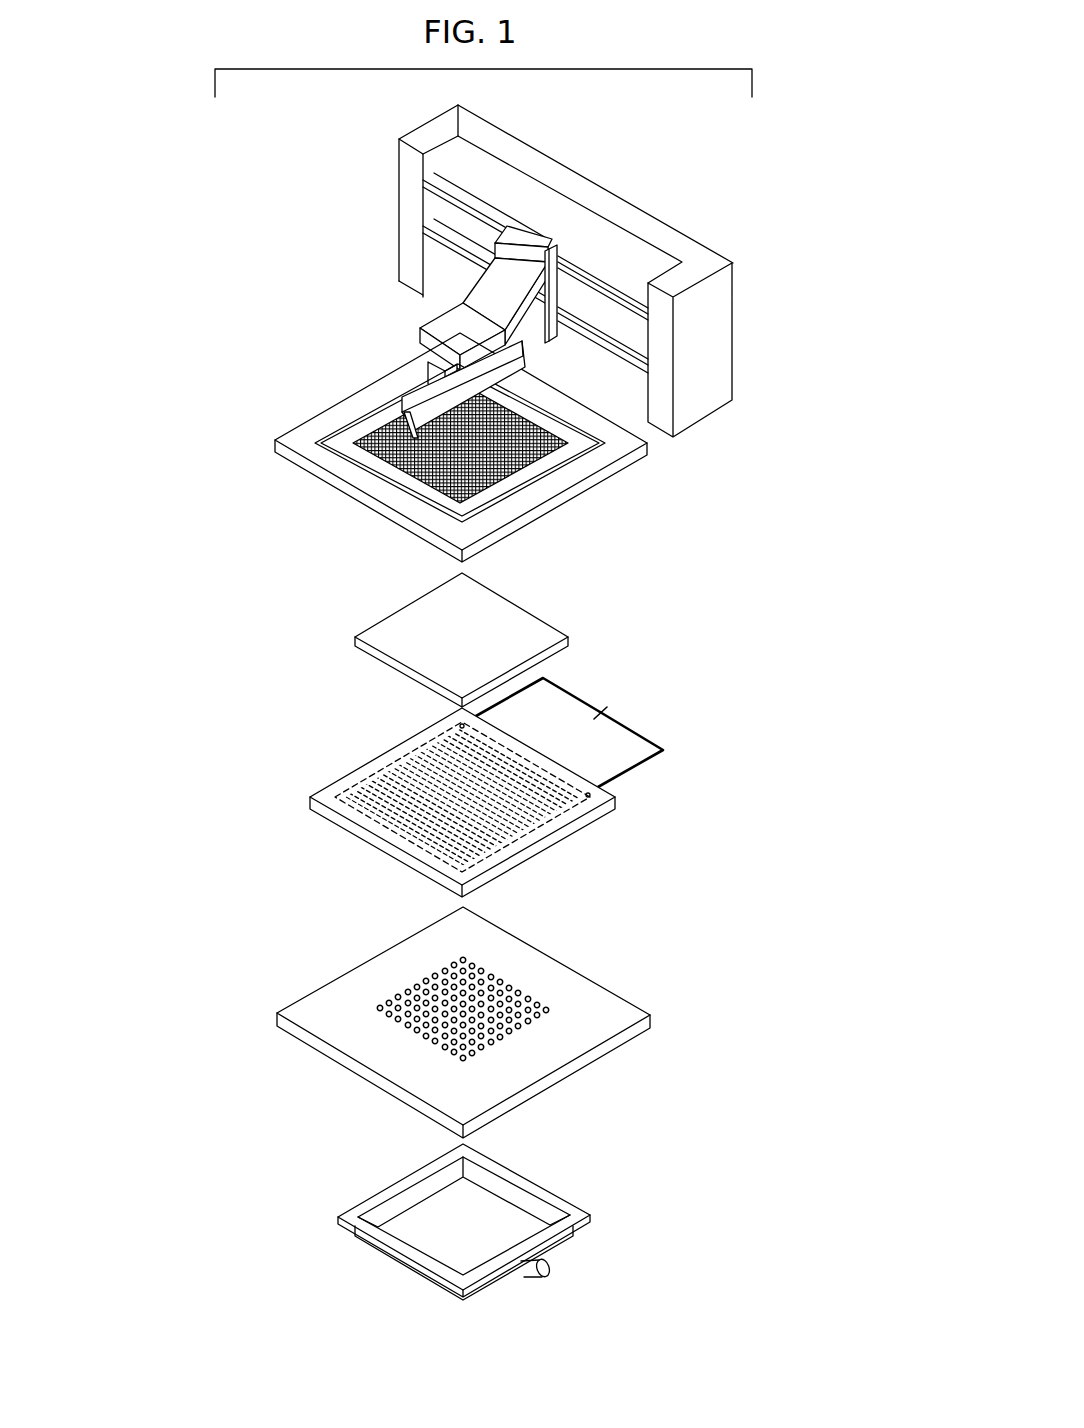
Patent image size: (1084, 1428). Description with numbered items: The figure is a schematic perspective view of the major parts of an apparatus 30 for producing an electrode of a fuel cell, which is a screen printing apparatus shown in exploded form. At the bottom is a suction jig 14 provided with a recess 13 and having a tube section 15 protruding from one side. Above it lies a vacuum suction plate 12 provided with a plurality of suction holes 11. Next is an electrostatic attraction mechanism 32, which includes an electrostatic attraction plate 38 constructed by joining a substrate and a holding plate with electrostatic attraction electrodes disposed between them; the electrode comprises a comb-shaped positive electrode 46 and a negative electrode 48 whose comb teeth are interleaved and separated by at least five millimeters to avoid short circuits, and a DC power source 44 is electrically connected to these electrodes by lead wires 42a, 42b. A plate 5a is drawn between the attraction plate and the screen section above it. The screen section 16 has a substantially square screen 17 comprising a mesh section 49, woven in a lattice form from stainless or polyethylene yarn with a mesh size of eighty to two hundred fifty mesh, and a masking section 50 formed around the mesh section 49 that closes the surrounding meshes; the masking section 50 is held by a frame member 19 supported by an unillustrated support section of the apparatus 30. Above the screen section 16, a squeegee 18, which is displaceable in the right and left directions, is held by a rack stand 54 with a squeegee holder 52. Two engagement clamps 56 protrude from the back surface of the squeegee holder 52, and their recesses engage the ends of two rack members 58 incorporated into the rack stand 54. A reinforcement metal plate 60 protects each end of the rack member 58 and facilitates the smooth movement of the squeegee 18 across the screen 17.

The apparatus for producing the electrode of the fuel cell 30 is at (255, 217).
The rack stand 54 is at (716, 317).
The rack members 58 is at (507, 198).
The engagement clamps 56 is at (563, 241).
The reinforcement metal plate 60 is at (620, 277).
The squeegee holder 52 is at (448, 323).
The squeegee 18 is at (503, 377).
The screen section 16 is at (450, 445).
The frame member 19 is at (305, 427).
The screen 17 is at (485, 455).
The masking section 50 is at (560, 460).
The mesh section 49 is at (473, 460).
The plate 5a is at (518, 623).
The electrostatic attraction mechanism 32 is at (505, 781).
The electrostatic attraction plate 38 is at (326, 789).
The positive electrode 46 is at (383, 755).
The negative electrode 48 is at (563, 843).
The lead wire 42a is at (569, 691).
The lead wire 42b is at (647, 737).
The DC power source 44 is at (610, 716).
The vacuum suction plate 12 is at (478, 1022).
The suction holes 11 is at (410, 993).
The suction jig 14 is at (469, 1222).
The recess 13 is at (530, 1207).
The tube section 15 is at (553, 1257).